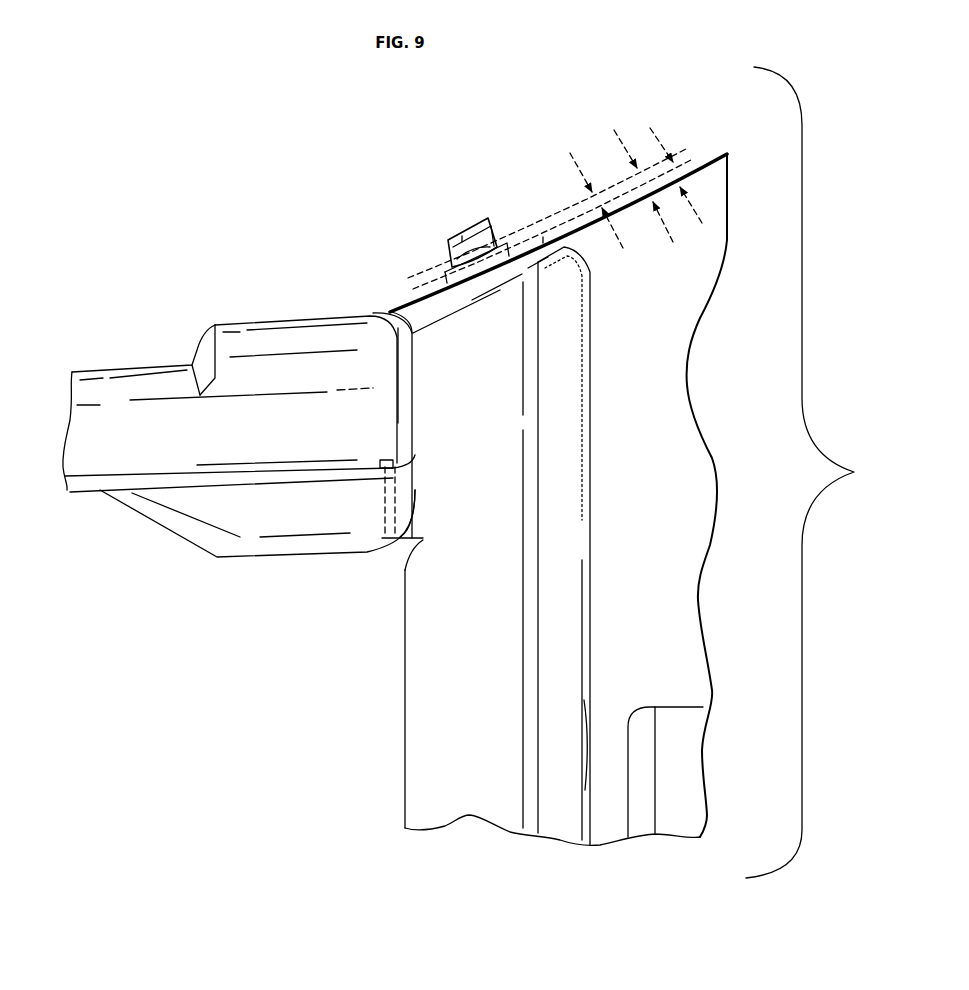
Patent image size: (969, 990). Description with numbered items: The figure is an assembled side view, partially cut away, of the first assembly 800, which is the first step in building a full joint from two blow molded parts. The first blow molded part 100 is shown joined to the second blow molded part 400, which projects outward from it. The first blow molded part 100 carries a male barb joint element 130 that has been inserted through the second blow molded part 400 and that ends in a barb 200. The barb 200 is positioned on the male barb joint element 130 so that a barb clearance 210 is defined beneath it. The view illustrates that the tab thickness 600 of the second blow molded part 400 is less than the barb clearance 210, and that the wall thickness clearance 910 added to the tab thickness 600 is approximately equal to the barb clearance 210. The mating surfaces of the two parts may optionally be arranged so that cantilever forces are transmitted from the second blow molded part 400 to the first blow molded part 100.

The first blow molded part 100 is at (447, 726).
The male barb joint element 130 is at (452, 254).
The barb 200 is at (468, 240).
The barb clearance 210 is at (618, 140).
The second blow molded part 400 is at (193, 510).
The tab thickness 600 is at (657, 140).
The first assembly 800 is at (821, 472).
The wall thickness clearance 910 is at (583, 163).